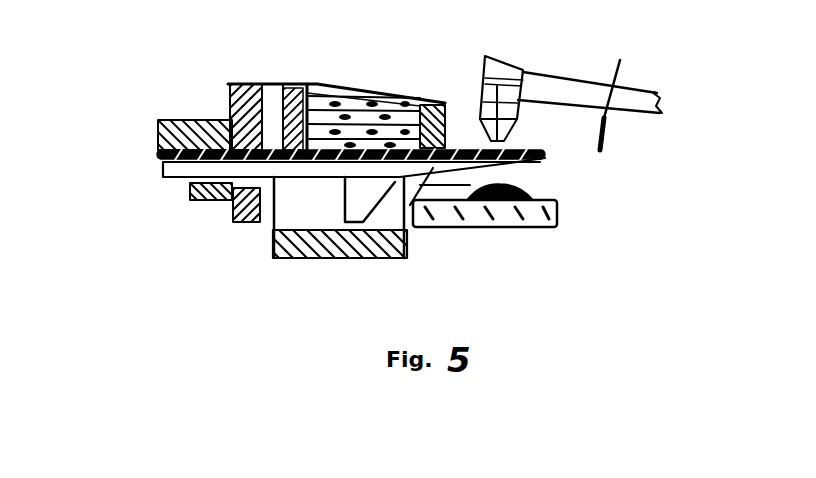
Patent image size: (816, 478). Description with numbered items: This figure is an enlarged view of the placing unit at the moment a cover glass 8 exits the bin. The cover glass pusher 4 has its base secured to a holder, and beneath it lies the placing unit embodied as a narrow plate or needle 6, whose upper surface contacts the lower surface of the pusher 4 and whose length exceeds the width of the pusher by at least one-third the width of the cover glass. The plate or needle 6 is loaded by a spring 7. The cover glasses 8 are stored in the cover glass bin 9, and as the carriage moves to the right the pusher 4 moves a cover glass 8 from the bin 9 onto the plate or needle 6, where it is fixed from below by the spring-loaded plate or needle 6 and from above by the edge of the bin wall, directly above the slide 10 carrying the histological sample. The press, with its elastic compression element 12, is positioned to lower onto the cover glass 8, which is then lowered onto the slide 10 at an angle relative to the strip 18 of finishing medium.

The cover glass pusher 4 is at (267, 148).
The plate or needle 6 is at (327, 175).
The spring 7 is at (160, 156).
The cover glass 8 is at (545, 158).
The cover glass bin 9 is at (297, 82).
The slide 10 is at (543, 227).
The elastic compression element 12 is at (480, 107).
The strip of the medium 18 is at (533, 186).